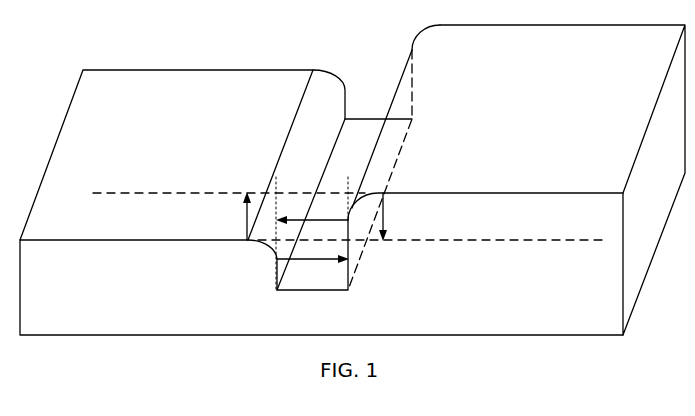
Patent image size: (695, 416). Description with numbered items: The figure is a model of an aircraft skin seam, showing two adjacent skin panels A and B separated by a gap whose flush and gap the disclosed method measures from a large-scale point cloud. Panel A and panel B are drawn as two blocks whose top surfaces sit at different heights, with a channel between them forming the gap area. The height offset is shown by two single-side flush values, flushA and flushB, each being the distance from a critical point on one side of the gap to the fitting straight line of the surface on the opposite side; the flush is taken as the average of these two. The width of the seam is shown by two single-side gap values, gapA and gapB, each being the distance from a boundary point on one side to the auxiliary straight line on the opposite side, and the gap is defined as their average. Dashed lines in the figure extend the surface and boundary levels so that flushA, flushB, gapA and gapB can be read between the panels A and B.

The first component / panel A is at (321, 202).
The second component / panel B is at (516, 180).
The single-side flush flushA is at (210, 216).
The single-side flush flushB is at (414, 217).
The single-side gap width gapA is at (313, 270).
The single-side gap width gapB is at (312, 207).